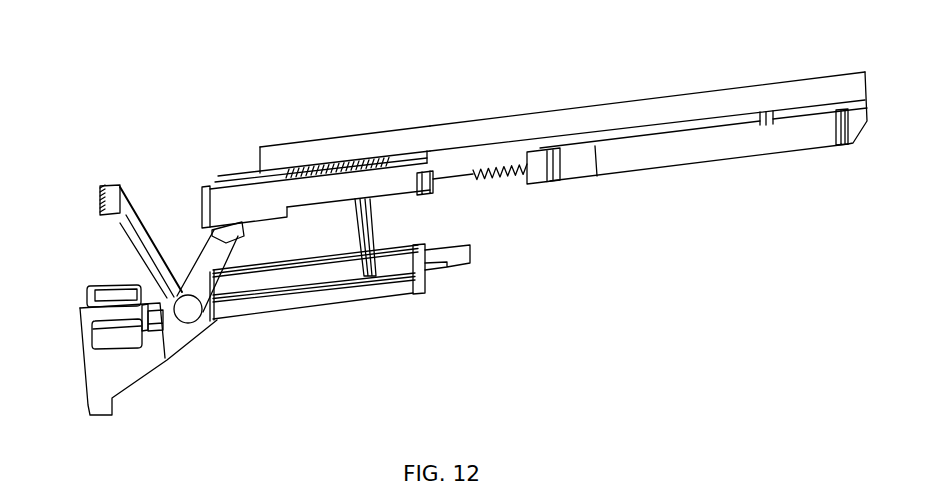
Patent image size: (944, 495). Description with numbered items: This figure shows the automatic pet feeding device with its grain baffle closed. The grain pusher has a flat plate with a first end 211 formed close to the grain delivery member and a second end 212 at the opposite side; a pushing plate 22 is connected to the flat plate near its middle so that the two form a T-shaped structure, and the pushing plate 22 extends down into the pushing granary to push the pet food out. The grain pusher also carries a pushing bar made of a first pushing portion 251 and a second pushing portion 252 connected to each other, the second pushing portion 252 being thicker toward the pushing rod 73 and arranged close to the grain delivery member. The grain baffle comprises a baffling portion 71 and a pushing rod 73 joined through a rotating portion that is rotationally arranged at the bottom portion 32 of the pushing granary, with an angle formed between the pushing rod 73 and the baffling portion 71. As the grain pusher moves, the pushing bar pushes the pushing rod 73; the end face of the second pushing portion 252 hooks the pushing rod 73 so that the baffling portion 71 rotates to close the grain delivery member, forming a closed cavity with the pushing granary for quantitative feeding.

The first end 211 is at (355, 150).
The second end 212 is at (715, 102).
The first pushing portion 251 is at (303, 197).
The second pushing portion 252 is at (233, 217).
The pushing plate 22 is at (374, 277).
The bottom portion 32 is at (298, 273).
The baffling portion 71 is at (120, 223).
The pushing rod 73 is at (203, 288).